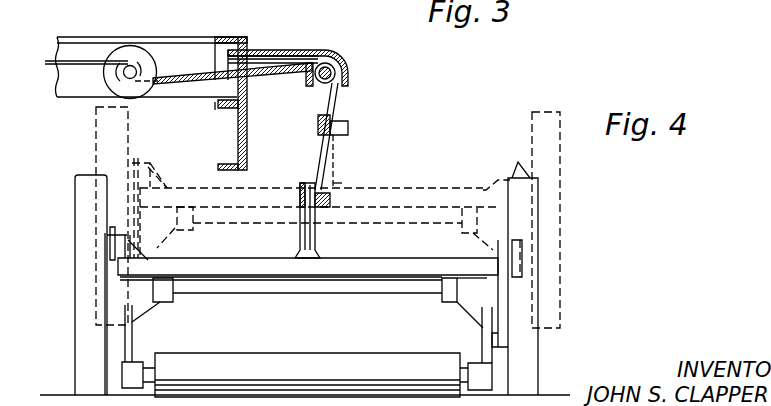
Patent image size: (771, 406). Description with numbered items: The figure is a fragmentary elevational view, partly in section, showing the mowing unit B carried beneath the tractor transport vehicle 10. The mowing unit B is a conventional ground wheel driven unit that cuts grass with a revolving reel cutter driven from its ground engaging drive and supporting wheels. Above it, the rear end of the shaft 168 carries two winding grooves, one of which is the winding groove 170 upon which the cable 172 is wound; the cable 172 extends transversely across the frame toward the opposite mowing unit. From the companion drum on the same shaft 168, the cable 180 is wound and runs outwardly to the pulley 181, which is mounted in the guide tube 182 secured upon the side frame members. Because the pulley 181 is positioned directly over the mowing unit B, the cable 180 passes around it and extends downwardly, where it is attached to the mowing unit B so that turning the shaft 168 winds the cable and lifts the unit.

The cable 172 is at (72, 62).
The winding groove 170 is at (116, 57).
The shaft 168 is at (130, 66).
The cable 180 is at (182, 73).
The guide tube 182 is at (270, 49).
The pulley 181 is at (318, 84).
The tractor transport vehicle 10 is at (248, 143).
The mowing unit B is at (535, 227).